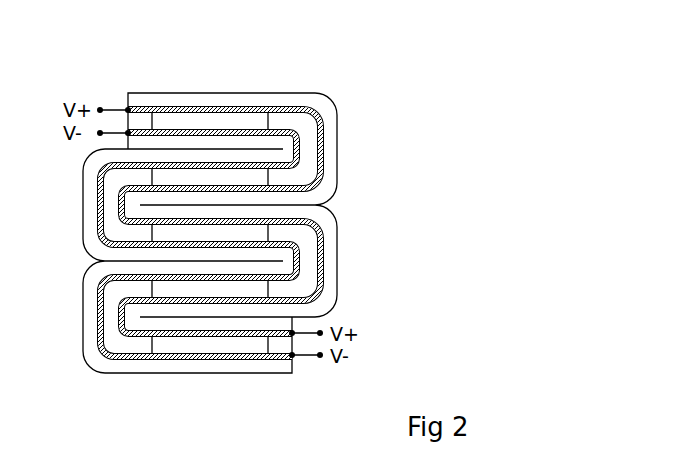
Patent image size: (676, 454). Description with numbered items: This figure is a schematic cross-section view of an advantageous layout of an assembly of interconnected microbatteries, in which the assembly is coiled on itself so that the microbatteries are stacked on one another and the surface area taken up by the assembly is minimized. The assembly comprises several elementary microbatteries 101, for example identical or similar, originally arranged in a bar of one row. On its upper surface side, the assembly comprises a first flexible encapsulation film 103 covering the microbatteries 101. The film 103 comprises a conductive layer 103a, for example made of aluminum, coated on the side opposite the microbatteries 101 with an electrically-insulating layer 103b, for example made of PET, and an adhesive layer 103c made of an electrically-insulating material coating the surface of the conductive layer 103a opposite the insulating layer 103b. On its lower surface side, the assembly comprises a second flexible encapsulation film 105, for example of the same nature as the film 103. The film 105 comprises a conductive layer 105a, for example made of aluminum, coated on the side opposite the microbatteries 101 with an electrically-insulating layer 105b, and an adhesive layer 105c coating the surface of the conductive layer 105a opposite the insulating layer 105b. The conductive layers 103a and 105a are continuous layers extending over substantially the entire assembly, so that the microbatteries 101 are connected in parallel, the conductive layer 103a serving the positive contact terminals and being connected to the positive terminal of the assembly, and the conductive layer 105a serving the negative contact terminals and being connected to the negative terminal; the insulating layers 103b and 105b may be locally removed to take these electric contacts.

The elementary microbattery 101 is at (210, 233).
The first flexible encapsulation film 103 is at (230, 171).
The conductive layer 103a is at (223, 107).
The electrically-insulating layer 103b is at (168, 93).
The adhesive layer 103c is at (286, 87).
The second flexible encapsulation film 105 is at (191, 293).
The conductive layer 105a is at (192, 358).
The electrically-insulating layer 105b is at (142, 362).
The adhesive layer 105c is at (268, 378).